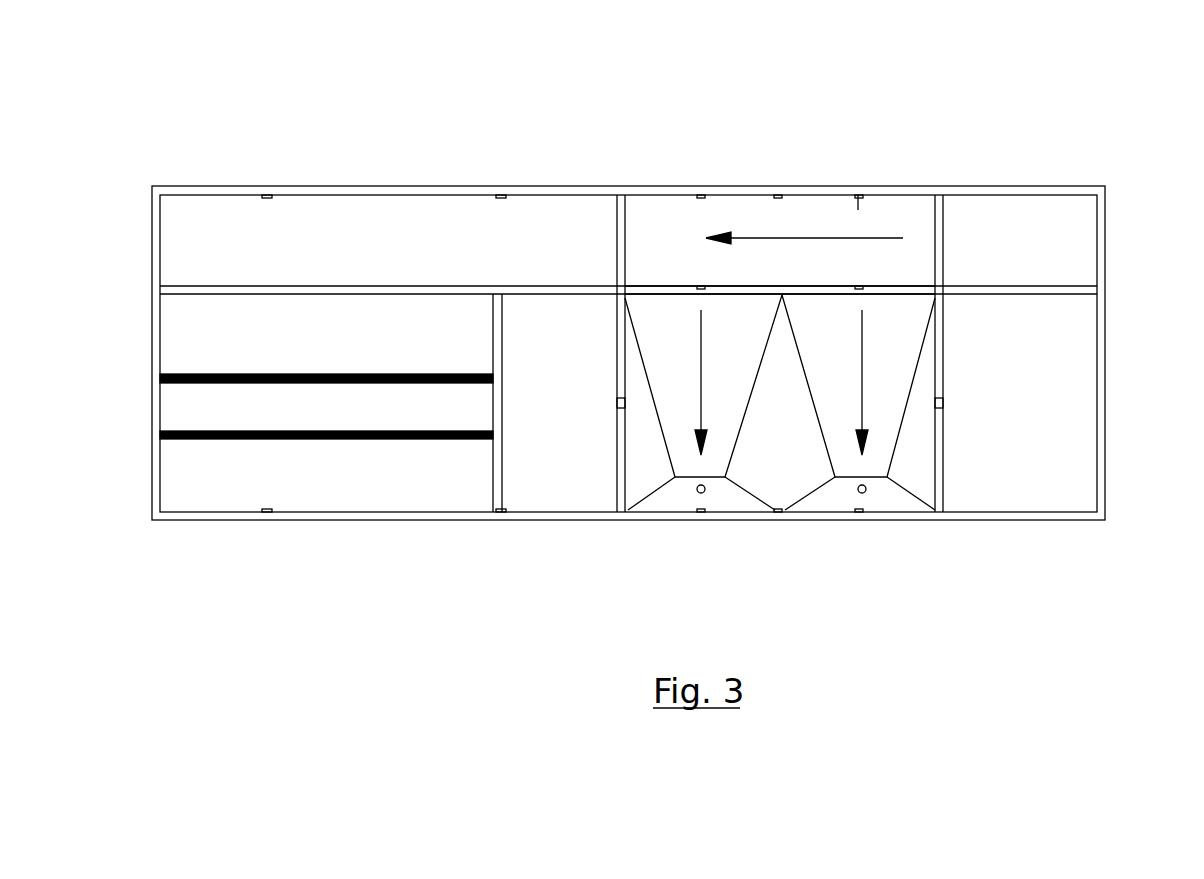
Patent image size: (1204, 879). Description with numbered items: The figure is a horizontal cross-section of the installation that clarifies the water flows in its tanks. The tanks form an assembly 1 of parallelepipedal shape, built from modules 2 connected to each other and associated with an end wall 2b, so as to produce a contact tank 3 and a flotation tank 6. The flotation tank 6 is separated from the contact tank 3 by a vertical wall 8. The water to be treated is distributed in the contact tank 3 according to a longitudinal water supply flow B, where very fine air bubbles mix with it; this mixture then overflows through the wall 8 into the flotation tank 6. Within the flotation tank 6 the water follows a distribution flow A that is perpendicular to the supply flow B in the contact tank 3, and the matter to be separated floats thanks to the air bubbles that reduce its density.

The assembly 1 is at (940, 186).
The module 2 is at (780, 520).
The end wall 2b is at (617, 452).
The contact tank 3 is at (676, 269).
The flotation tank 6 is at (791, 456).
The vertical wall 8 is at (857, 287).
The distribution flow A is at (702, 348).
The water supply flow B is at (803, 238).